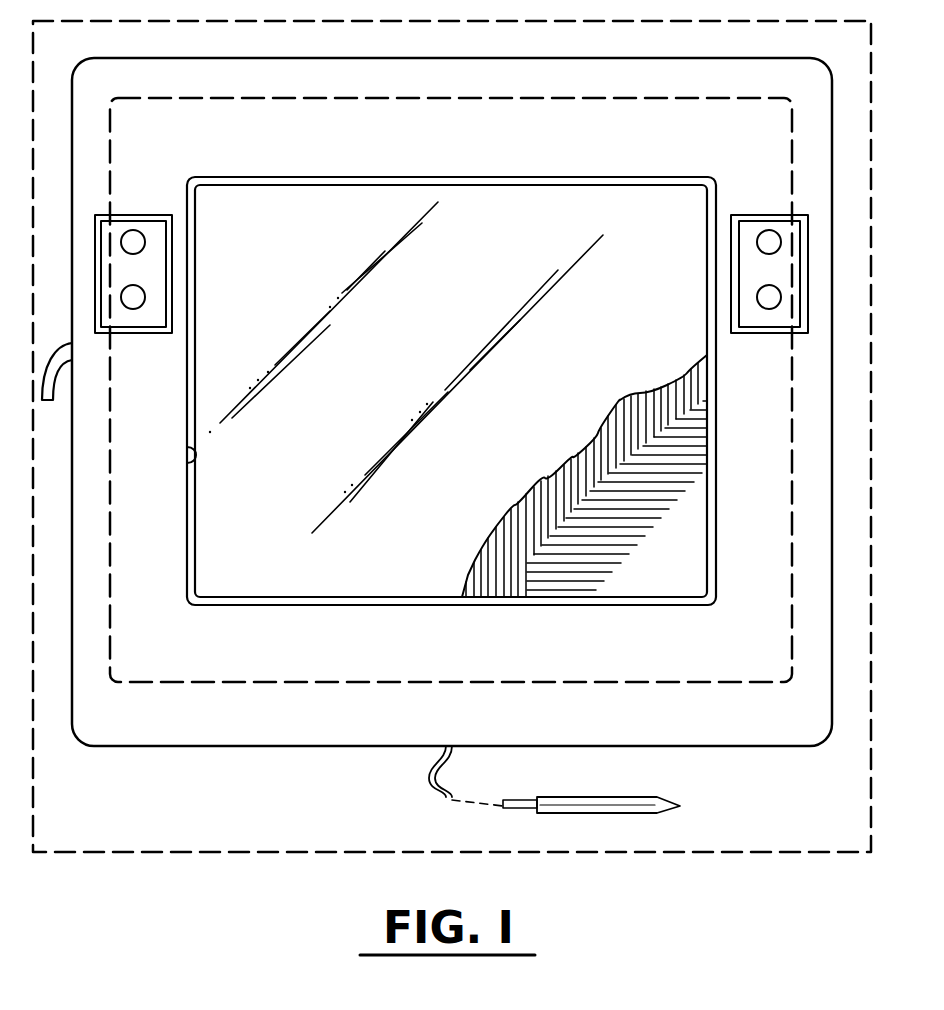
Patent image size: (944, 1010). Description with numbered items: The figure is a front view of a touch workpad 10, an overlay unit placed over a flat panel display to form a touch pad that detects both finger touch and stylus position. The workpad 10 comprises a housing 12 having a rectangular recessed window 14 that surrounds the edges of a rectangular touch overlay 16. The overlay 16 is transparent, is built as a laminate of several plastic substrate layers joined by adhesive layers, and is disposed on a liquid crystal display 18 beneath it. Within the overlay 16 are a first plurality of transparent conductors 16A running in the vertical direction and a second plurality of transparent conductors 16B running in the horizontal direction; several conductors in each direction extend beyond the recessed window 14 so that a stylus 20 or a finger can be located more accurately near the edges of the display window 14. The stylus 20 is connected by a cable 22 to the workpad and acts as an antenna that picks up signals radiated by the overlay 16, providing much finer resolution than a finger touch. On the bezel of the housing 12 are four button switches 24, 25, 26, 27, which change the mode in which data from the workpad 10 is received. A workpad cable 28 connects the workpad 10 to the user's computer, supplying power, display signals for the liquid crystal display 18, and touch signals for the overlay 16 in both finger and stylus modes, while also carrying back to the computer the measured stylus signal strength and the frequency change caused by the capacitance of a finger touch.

The workpad 10 is at (803, 830).
The housing 12 is at (69, 677).
The recessed window 14 is at (187, 467).
The touch overlay 16 is at (447, 359).
The first plurality of transparent conductors 16A is at (607, 430).
The second plurality of transparent conductors 16B is at (562, 600).
The liquid crystal display 18 is at (680, 574).
The stylus 20 is at (632, 797).
The cable 22 is at (423, 780).
The button switch 24 is at (769, 230).
The button switch 25 is at (770, 310).
The button switch 26 is at (133, 230).
The button switch 27 is at (133, 309).
The workpad cable 28 is at (55, 380).